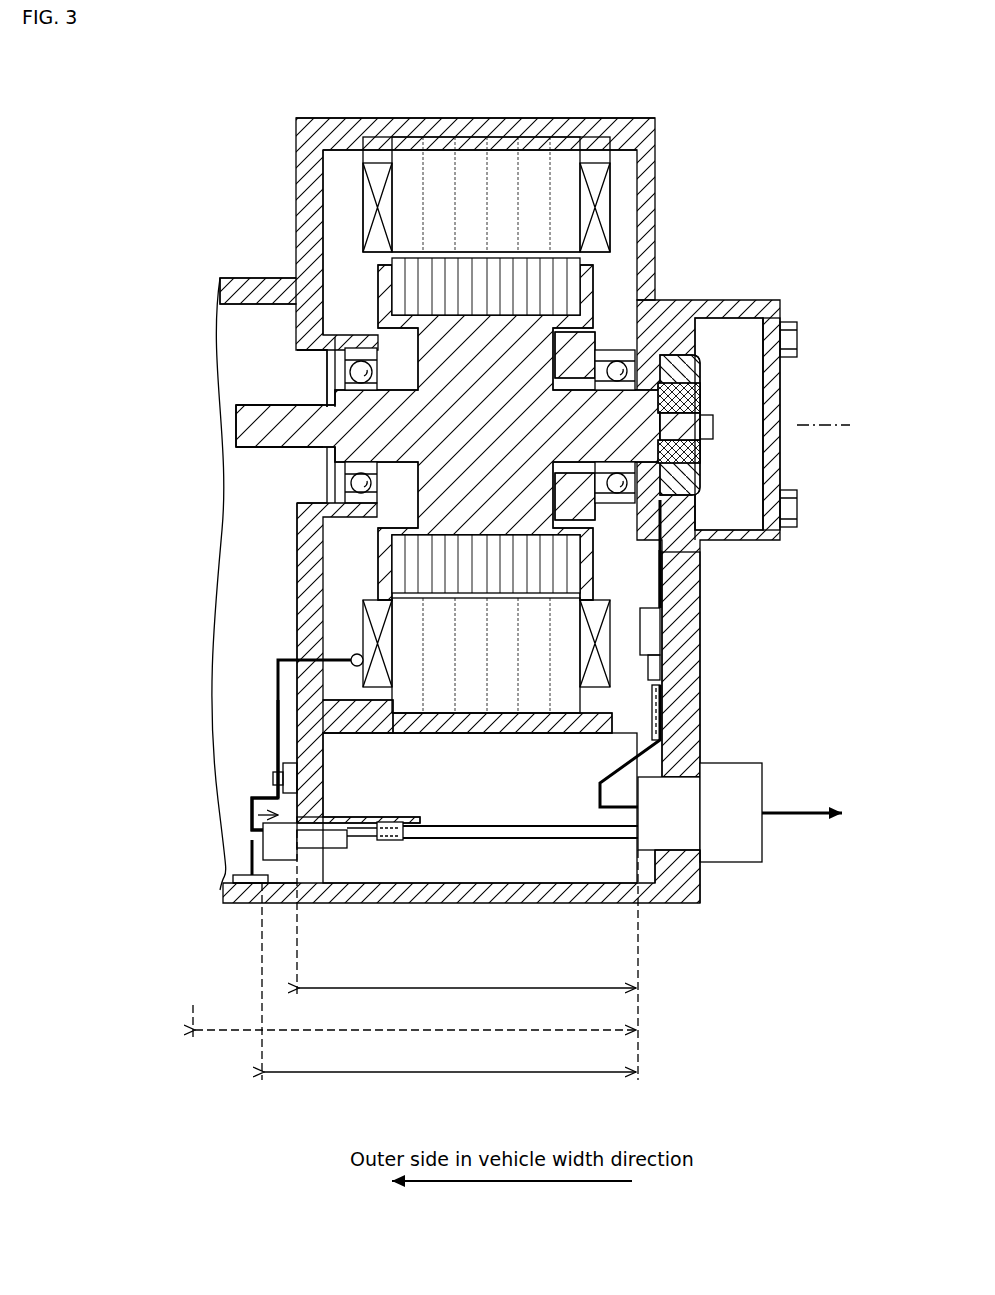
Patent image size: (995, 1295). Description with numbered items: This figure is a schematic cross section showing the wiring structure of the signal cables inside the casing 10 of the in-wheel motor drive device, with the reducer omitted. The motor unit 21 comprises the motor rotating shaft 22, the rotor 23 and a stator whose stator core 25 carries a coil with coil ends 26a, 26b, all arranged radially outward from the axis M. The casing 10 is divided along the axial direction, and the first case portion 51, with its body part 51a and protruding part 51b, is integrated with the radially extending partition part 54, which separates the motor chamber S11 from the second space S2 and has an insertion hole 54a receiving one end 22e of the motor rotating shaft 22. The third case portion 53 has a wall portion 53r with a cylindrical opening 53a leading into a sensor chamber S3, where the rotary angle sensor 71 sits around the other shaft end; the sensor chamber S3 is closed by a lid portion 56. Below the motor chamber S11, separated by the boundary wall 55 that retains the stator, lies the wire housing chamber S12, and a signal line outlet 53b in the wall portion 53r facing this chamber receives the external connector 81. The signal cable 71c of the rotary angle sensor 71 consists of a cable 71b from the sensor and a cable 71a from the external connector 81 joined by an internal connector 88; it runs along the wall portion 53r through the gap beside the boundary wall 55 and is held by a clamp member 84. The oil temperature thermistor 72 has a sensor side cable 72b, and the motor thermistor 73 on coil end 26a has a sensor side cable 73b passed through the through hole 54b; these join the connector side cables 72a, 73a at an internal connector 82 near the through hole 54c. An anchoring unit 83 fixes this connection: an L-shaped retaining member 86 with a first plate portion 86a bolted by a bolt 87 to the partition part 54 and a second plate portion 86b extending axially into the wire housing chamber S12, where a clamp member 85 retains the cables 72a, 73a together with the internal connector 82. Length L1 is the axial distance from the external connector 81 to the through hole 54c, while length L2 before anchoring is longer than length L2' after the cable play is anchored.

The casing 10 is at (640, 116).
The motor unit 21 is at (350, 183).
The motor rotating shaft 22 is at (565, 405).
The one end of the motor rotating shaft 22e is at (262, 430).
The rotor 23 is at (428, 268).
The stator core 25 is at (535, 145).
The coil end 26a is at (380, 163).
The coil end 26b is at (598, 163).
The first case portion 51 is at (496, 116).
The body part 51a is at (456, 128).
The protruding part 51b is at (236, 290).
The third case portion 53 is at (658, 186).
The opening 53a is at (700, 368).
The signal line outlet 53b is at (692, 840).
The wall portion 53r is at (690, 650).
The partition part 54 is at (307, 578).
The insertion hole 54a is at (307, 363).
The through hole 54b is at (313, 702).
The through hole 54c is at (312, 815).
The boundary wall 55 is at (573, 726).
The lid portion 56 is at (775, 394).
The rotary angle sensor 71 is at (712, 478).
The cable 71a is at (662, 685).
The cable 71b is at (662, 594).
The signal cable 71c is at (826, 585).
The oil temperature thermistor 72 is at (240, 877).
The cable 72a is at (515, 893).
The cable 72b is at (250, 856).
The motor thermistor 73 is at (352, 658).
The cable 73a is at (565, 884).
The cable 73b is at (278, 737).
The external connector 81 is at (673, 787).
The internal connector 82 is at (268, 886).
The anchoring unit 83 is at (263, 823).
The clamp member 84 is at (656, 705).
The clamp member 85 is at (386, 842).
The retaining member 86 is at (337, 850).
The first plate portion 86a is at (278, 800).
The second plate portion 86b is at (390, 822).
The bolt 87 is at (273, 777).
The internal connector 88 is at (655, 622).
The axis M is at (835, 426).
The second space S2 is at (253, 522).
The sensor chamber S3 is at (740, 330).
The motor chamber S11 is at (350, 278).
The wire housing chamber S12 is at (455, 860).
The length L1 is at (467, 976).
The length L2 is at (415, 1018).
The length L2' is at (450, 1060).